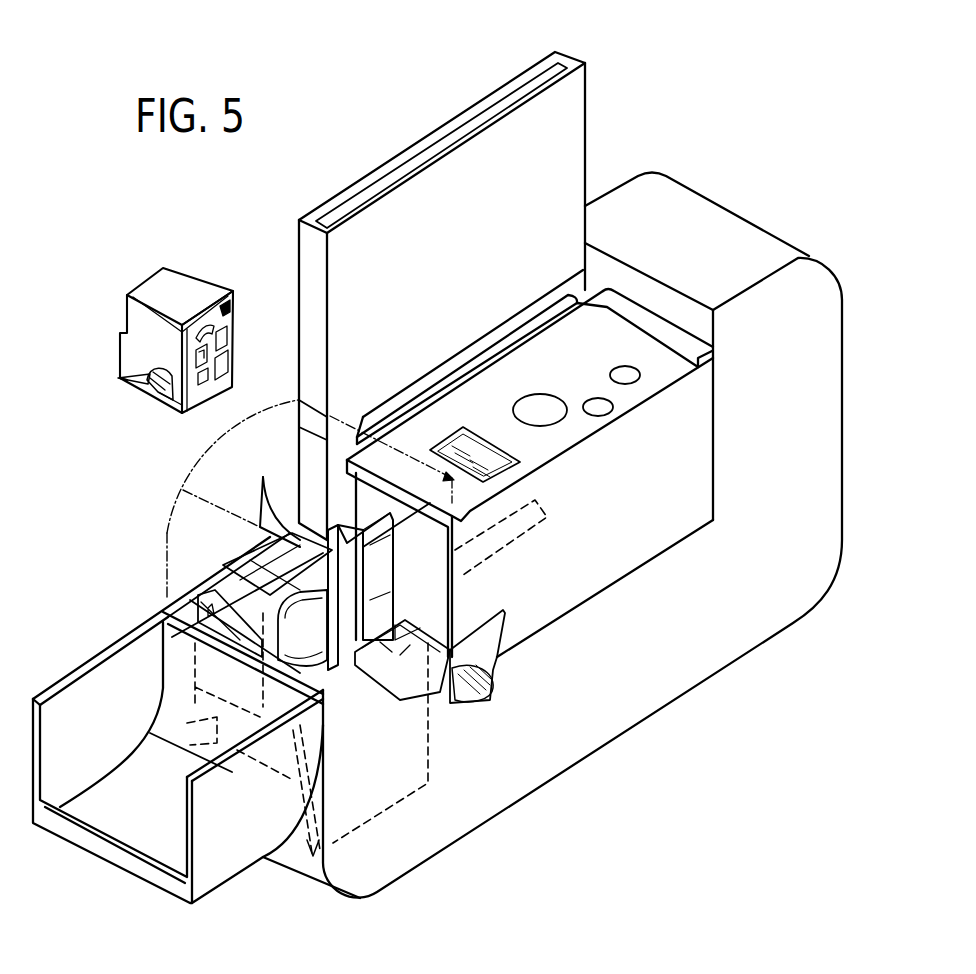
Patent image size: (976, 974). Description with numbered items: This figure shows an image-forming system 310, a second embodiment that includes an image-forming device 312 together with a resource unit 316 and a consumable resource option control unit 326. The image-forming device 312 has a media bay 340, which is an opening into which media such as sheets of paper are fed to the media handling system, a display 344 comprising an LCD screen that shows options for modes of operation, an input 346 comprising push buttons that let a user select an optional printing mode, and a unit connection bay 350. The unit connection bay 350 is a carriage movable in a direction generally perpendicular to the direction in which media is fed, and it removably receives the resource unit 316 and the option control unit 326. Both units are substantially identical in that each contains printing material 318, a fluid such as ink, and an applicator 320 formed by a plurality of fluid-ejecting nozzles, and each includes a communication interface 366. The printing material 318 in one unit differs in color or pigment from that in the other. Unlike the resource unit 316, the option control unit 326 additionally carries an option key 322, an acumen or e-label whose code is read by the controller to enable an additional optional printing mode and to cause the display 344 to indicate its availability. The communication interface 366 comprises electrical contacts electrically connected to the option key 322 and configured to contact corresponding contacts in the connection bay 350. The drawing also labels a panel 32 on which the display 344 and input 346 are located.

The image-forming system 310 is at (140, 336).
The image-forming device 312 is at (740, 218).
The resource unit 316 is at (235, 562).
The printing material 318 is at (148, 378).
The applicator 320 is at (117, 353).
The option key 322 is at (157, 392).
The consumable resource option control unit 326 is at (190, 278).
The panel 32 is at (575, 434).
The media bay 340 is at (568, 62).
The display 344 is at (507, 465).
The input 346 is at (613, 407).
The unit connection bay 350 is at (264, 500).
The communication interface 366 is at (165, 405).